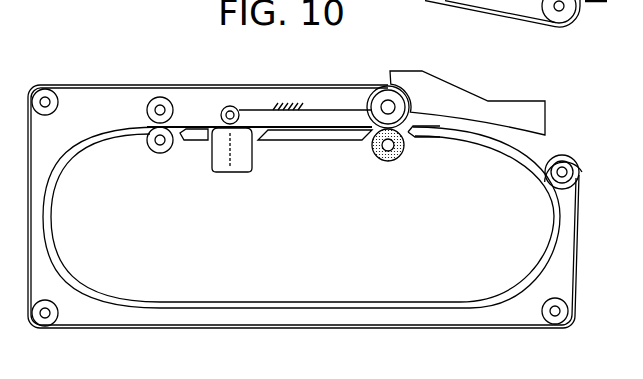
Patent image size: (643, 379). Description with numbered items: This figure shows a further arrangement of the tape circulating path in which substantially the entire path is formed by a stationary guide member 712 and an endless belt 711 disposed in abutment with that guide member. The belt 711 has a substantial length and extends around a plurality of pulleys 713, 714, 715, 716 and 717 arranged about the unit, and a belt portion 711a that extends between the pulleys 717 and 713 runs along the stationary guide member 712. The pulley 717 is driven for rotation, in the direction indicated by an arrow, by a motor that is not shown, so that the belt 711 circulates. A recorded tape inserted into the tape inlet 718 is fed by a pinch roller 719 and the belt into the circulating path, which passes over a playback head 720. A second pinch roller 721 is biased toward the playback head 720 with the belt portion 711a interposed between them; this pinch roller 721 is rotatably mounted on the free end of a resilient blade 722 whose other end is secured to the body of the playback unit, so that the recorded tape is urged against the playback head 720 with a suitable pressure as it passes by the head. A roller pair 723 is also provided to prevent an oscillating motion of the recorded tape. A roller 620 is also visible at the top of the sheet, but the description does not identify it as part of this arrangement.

The roller 620 is at (567, 12).
The endless belt 711 is at (318, 328).
The belt portion 711a is at (315, 127).
The stationary guide member 712 is at (298, 303).
The pulley 713 is at (375, 97).
The pulley 714 is at (58, 103).
The pulley 715 is at (50, 321).
The pulley 716 is at (548, 319).
The pulley 717 is at (553, 170).
The tape inlet 718 is at (550, 135).
The pinch roller 719 is at (387, 162).
The playback head 720 is at (220, 173).
The pinch roller 721 is at (230, 106).
The resilient blade 722 is at (262, 108).
The roller pair 723 is at (147, 140).